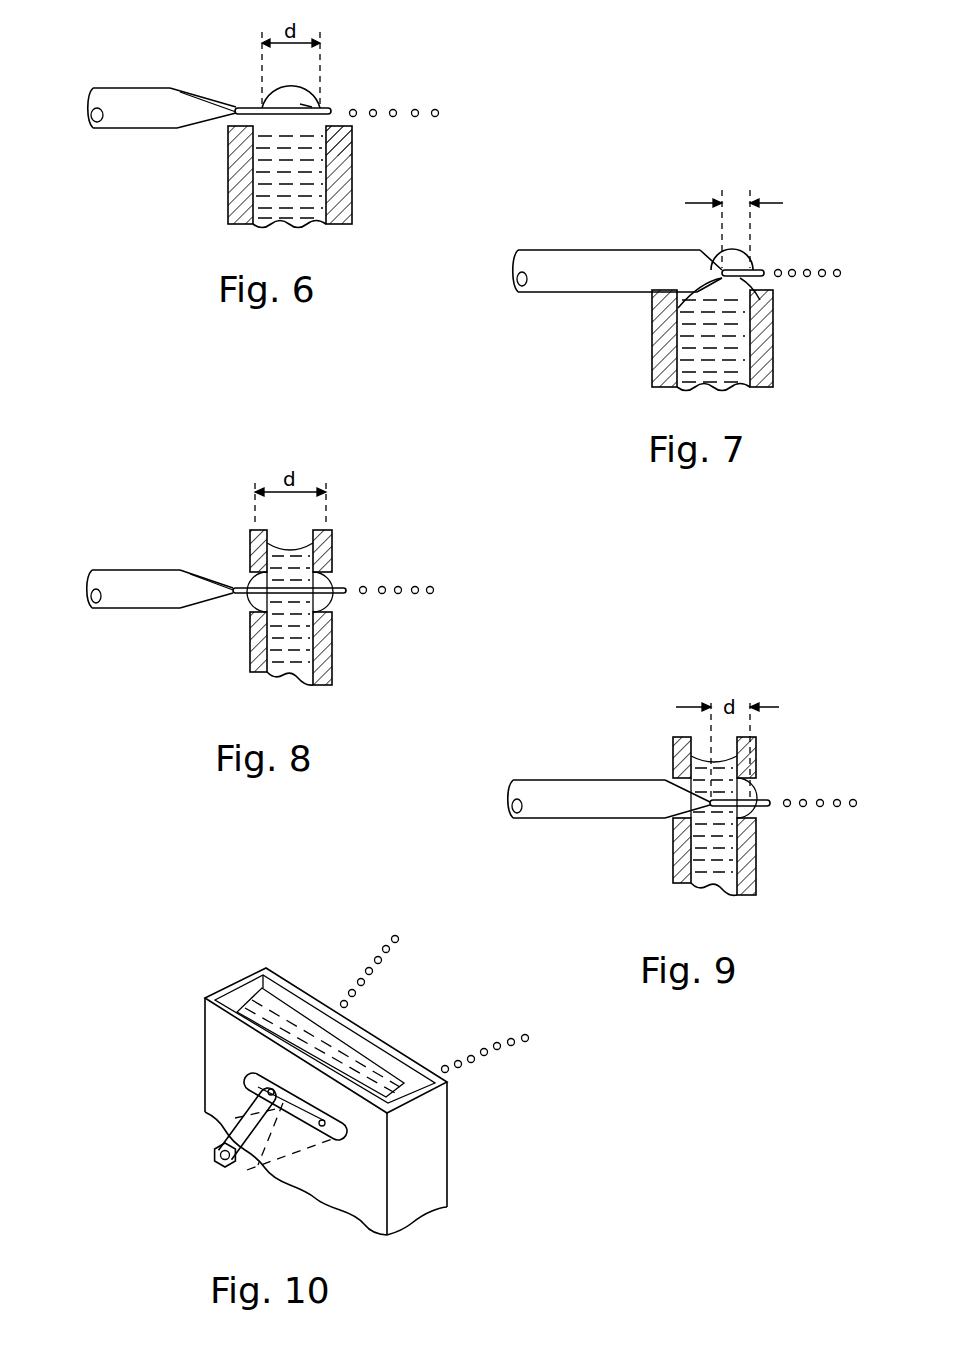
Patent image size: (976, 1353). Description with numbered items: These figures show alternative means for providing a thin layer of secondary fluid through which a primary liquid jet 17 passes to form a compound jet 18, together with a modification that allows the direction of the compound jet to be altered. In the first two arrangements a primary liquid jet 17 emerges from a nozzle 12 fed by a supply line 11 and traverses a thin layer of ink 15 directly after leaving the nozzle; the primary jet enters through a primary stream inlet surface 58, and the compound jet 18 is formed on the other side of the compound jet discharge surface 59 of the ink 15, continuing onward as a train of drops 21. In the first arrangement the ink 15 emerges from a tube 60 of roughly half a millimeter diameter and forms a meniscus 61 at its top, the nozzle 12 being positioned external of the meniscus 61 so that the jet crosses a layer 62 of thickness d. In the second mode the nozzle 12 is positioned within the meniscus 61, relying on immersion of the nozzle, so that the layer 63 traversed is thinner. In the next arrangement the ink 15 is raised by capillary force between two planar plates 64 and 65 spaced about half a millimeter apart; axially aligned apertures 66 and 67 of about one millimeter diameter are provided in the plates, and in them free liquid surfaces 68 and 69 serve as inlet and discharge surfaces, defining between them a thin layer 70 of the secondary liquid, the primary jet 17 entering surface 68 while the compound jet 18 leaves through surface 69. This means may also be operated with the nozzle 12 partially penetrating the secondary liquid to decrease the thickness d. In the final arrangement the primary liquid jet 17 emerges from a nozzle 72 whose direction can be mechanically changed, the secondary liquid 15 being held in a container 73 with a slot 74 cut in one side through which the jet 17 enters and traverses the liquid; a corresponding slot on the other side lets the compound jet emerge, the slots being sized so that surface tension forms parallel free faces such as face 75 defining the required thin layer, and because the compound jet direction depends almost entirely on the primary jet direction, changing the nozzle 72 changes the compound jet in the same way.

In FIG. 6, the supply pipe 11 is at (140, 115).
In FIG. 7, the supply pipe 11 is at (570, 282).
In FIG. 8, the supply pipe 11 is at (130, 600).
In FIG. 9, the supply pipe 11 is at (566, 808).
In FIG. 6, the nozzle 12 is at (203, 124).
In FIG. 7, the nozzle 12 is at (702, 292).
In FIG. 8, the nozzle 12 is at (203, 606).
In FIG. 9, the nozzle 12 is at (678, 800).
In FIG. 6, the ink 15 is at (283, 202).
In FIG. 7, the ink 15 is at (700, 352).
In FIG. 8, the ink 15 is at (292, 668).
In FIG. 9, the ink 15 is at (720, 880).
In FIG. 10, the ink 15 is at (258, 1010).
In FIG. 6, the primary liquid jet 17 is at (243, 107).
In FIG. 7, the primary liquid jet 17 is at (744, 285).
In FIG. 10, the primary liquid jet 17 is at (250, 1084).
In FIG. 7, the compound jet 18 is at (762, 268).
In FIG. 8, the compound jet 18 is at (337, 596).
In FIG. 9, the compound jet 18 is at (770, 800).
In FIG. 6, the droplets 21 is at (418, 110).
In FIG. 7, the droplets 21 is at (824, 270).
In FIG. 8, the droplets 21 is at (416, 586).
In FIG. 9, the droplets 21 is at (840, 800).
In FIG. 10, the droplets 21 is at (386, 946).
In FIG. 6, the primary stream inlet surface 58 is at (188, 90).
In FIG. 6, the compound jet discharge surface 59 is at (334, 118).
In FIG. 6, the tube 60 is at (340, 188).
In FIG. 6, the meniscus 61 is at (306, 93).
In FIG. 7, the meniscus 61 is at (714, 260).
In FIG. 6, the layer 62 is at (304, 107).
In FIG. 7, the layer 63 is at (728, 198).
In FIG. 8, the planar plate 64 is at (254, 636).
In FIG. 9, the planar plate 64 is at (680, 866).
In FIG. 8, the planar plate 65 is at (322, 659).
In FIG. 9, the planar plate 65 is at (745, 872).
In FIG. 8, the aperture 66 is at (255, 582).
In FIG. 9, the aperture 66 is at (680, 780).
In FIG. 8, the aperture 67 is at (326, 576).
In FIG. 9, the aperture 67 is at (757, 782).
In FIG. 8, the free liquid surface 68 is at (246, 586).
In FIG. 8, the free liquid surface 69 is at (331, 587).
In FIG. 9, the free liquid surface 69 is at (760, 818).
In FIG. 8, the thin layer 70 is at (286, 588).
In FIG. 10, the nozzle 72 is at (243, 1124).
In FIG. 10, the container 73 is at (430, 1168).
In FIG. 10, the slot 74 is at (330, 1142).
In FIG. 10, the face 75 is at (300, 1120).